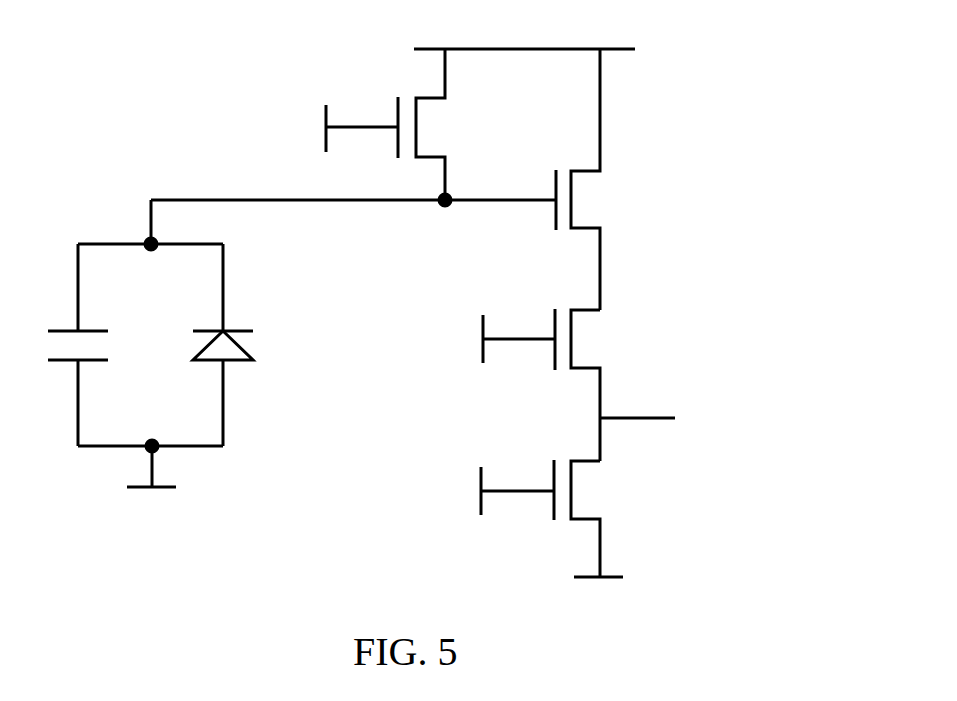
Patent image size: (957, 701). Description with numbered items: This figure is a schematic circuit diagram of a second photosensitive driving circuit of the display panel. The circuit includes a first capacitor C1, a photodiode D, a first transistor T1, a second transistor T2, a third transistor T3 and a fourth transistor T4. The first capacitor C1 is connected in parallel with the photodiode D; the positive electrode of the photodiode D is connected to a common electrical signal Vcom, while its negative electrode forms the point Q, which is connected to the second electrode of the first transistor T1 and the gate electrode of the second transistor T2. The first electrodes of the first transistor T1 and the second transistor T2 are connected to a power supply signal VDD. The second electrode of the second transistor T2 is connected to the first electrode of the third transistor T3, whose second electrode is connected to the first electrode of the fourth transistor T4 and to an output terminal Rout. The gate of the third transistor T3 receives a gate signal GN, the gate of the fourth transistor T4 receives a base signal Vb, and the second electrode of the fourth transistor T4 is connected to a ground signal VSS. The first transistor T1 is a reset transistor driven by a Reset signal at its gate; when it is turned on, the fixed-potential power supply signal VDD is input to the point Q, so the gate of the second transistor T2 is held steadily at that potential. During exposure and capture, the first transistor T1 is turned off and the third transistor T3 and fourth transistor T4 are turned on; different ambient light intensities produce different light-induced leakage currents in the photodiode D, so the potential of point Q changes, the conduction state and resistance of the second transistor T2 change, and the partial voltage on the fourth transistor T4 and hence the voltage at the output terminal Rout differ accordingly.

The first transistor T1 is at (440, 124).
The second transistor T2 is at (597, 179).
The third transistor T3 is at (596, 385).
The fourth transistor T4 is at (596, 518).
The first capacitor C1 is at (135, 345).
The photodiode D is at (244, 345).
The point Q is at (339, 207).
The power supply signal VDD is at (524, 29).
The ground signal VSS is at (600, 598).
The common electrical signal Vcom is at (152, 484).
The reset signal Reset is at (325, 128).
The gate signal GN is at (493, 339).
The base signal Vb is at (494, 491).
The output terminal Rout is at (672, 417).